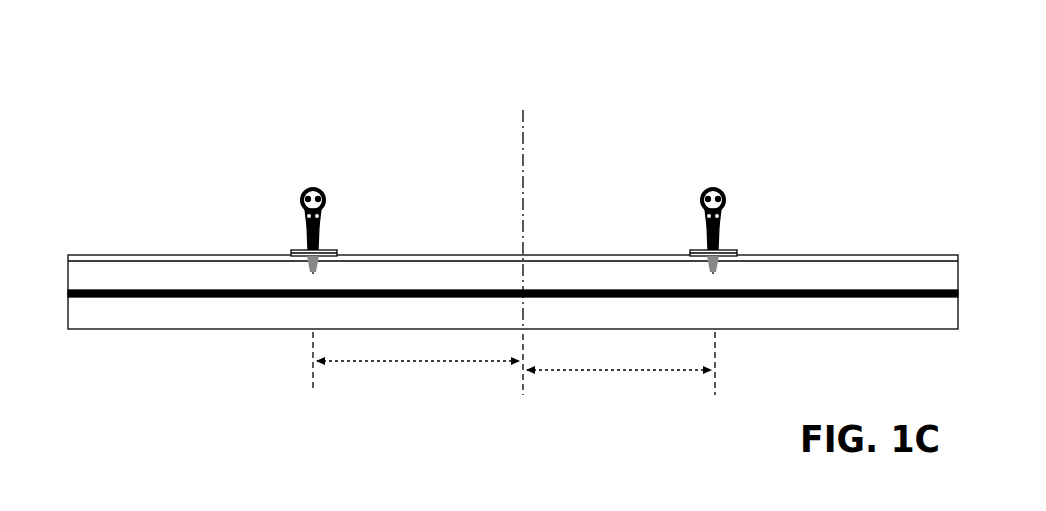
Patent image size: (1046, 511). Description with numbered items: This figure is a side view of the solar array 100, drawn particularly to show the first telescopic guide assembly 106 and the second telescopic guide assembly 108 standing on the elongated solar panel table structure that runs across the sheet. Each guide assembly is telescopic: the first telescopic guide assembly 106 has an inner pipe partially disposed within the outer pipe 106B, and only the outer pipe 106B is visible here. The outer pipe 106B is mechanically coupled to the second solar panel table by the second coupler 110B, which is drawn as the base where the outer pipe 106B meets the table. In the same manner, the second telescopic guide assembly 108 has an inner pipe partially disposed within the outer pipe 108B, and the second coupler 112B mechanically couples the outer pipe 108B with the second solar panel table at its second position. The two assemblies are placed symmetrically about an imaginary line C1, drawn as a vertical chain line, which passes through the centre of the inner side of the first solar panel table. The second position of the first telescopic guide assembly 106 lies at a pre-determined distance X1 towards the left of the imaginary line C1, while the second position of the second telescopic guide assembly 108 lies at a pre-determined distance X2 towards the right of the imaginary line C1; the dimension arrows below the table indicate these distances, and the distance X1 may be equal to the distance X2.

The solar array 100 is at (174, 66).
The first telescopic guide assembly 106 is at (317, 185).
The outer pipe 106B is at (316, 188).
The second coupler 110B is at (297, 219).
The second telescopic guide assembly 108 is at (712, 185).
The outer pipe 108B is at (708, 187).
The second coupler 112B is at (688, 222).
The imaginary line C1 is at (524, 141).
The pre-determined distance X1 is at (418, 366).
The pre-determined distance X2 is at (621, 371).